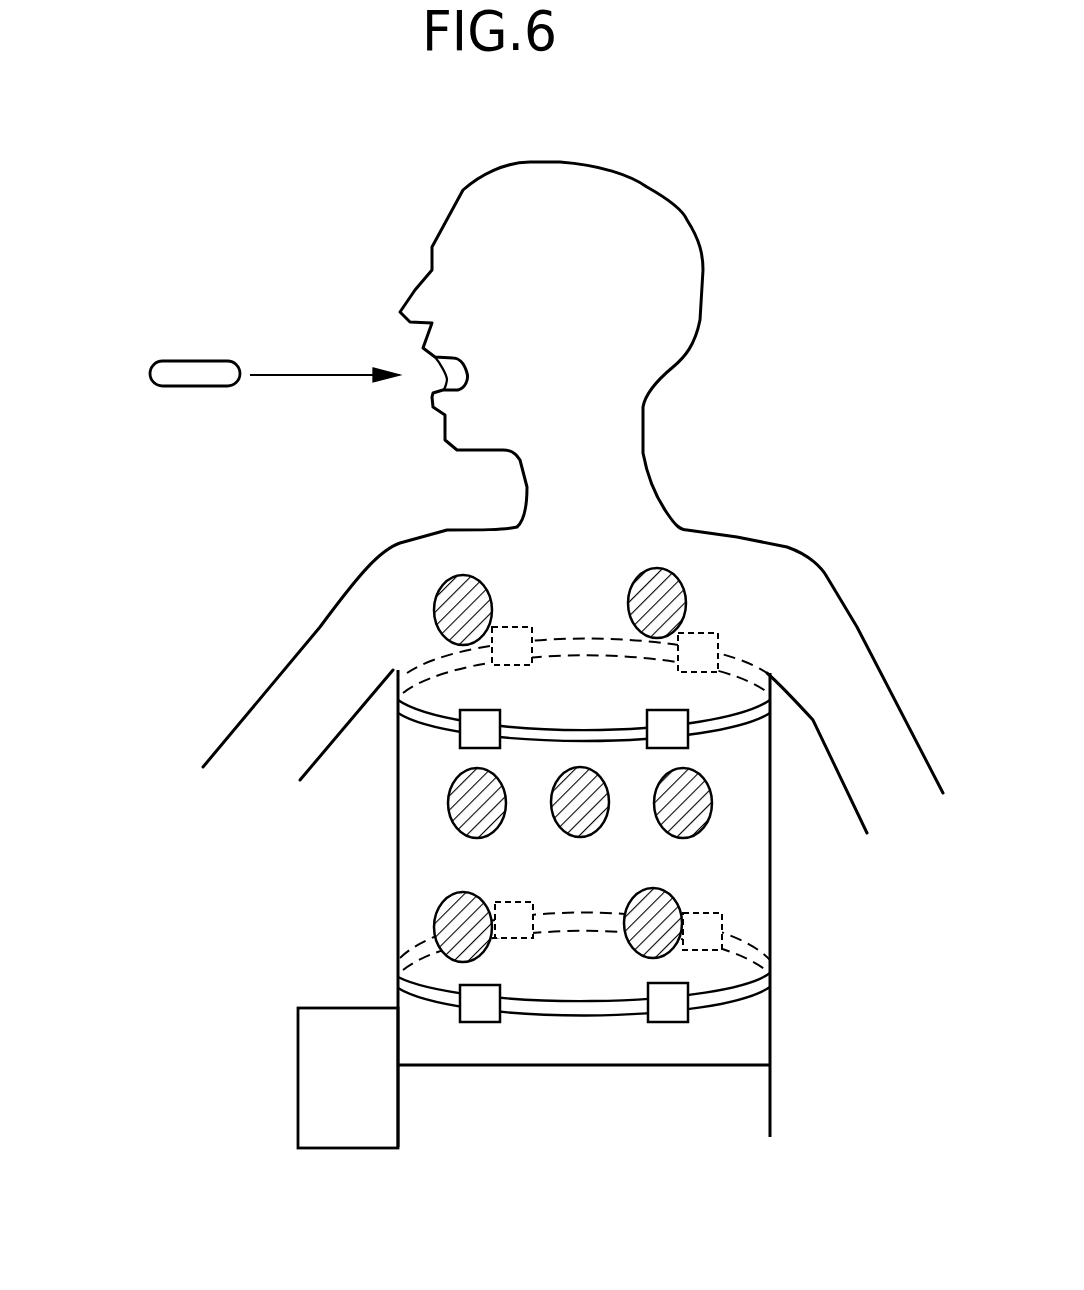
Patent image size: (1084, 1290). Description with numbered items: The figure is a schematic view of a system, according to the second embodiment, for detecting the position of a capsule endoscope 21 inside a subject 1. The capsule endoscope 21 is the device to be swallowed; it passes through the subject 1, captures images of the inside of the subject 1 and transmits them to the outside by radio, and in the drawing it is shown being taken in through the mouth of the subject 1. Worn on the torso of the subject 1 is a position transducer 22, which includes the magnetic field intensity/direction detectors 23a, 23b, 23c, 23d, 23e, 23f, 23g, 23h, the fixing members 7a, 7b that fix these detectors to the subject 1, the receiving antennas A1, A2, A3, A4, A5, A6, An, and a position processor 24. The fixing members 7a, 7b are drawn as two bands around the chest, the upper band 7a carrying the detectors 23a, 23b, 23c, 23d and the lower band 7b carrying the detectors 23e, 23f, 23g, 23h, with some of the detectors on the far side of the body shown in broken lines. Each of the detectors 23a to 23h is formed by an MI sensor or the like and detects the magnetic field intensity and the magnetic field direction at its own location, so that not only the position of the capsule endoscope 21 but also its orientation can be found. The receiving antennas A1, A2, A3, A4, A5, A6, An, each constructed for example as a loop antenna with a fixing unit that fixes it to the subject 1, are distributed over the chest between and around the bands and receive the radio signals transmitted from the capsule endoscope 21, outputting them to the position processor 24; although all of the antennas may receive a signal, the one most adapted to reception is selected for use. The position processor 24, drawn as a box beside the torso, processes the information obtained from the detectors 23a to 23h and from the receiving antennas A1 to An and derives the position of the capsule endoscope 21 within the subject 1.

The subject 1 is at (607, 163).
The capsule endoscope 21 is at (195, 387).
The position transducer 22 is at (148, 793).
The position processor 24 is at (313, 1100).
The fixing member 7a is at (413, 715).
The fixing member 7b is at (585, 1013).
The magnetic field intensity/direction detector 23a is at (473, 735).
The magnetic field intensity/direction detector 23b is at (660, 710).
The magnetic field intensity/direction detector 23c is at (708, 633).
The magnetic field intensity/direction detector 23d is at (500, 627).
The magnetic field intensity/direction detector 23e is at (480, 1010).
The magnetic field intensity/direction detector 23f is at (668, 1010).
The magnetic field intensity/direction detector 23g is at (692, 915).
The magnetic field intensity/direction detector 23h is at (503, 902).
The receiving antenna A1 is at (450, 823).
The receiving antenna A2 is at (598, 832).
The receiving antenna A3 is at (705, 832).
The receiving antenna A4 is at (483, 580).
The receiving antenna A5 is at (687, 583).
The receiving antenna A6 is at (493, 950).
The receiving antenna An is at (627, 950).